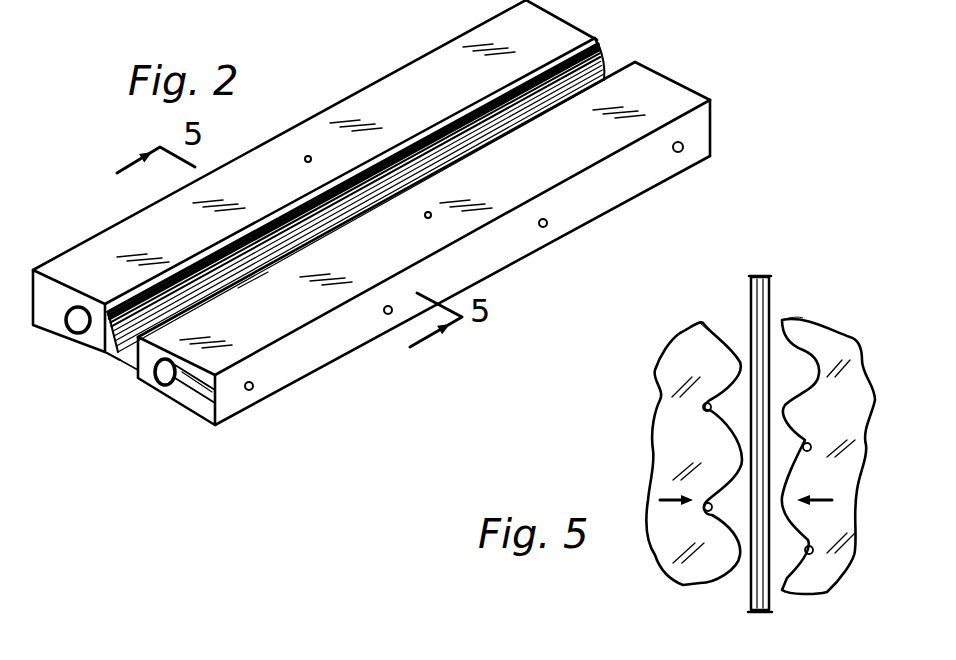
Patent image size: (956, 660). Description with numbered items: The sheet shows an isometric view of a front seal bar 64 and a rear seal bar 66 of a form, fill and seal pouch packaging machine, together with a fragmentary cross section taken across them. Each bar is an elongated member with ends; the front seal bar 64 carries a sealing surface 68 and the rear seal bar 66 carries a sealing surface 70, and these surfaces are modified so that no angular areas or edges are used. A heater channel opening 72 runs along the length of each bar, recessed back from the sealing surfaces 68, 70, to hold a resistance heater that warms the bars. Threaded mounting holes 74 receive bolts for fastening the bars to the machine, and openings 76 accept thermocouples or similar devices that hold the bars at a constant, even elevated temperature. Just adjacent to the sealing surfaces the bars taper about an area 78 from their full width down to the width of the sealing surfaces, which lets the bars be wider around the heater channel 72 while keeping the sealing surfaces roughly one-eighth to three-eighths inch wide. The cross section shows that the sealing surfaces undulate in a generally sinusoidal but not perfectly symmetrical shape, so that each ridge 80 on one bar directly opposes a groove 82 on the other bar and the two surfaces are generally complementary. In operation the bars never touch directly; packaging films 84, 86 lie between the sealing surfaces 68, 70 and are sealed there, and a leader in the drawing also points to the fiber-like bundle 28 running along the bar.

In FIG. 2, the optical fibers 28 is at (598, 44).
In FIG. 2, the front seal bar 64 is at (532, 186).
In FIG. 5, the front seal bar 64 is at (840, 470).
In FIG. 2, the rear seal bar 66 is at (500, 78).
In FIG. 5, the rear seal bar 66 is at (668, 378).
In FIG. 2, the sealing surface 68 is at (135, 363).
In FIG. 2, the sealing surface 70 is at (115, 360).
In FIG. 2, the heater channel opening 72 is at (111, 272).
In FIG. 2, the mounting holes 74 is at (249, 390).
In FIG. 2, the openings 76 is at (308, 162).
In FIG. 2, the tapered area 78 is at (200, 262).
In FIG. 5, the ridge 80 is at (682, 340).
In FIG. 5, the groove 82 is at (705, 408).
In FIG. 5, the packaging film 84 is at (770, 290).
In FIG. 5, the packaging film 86 is at (750, 300).